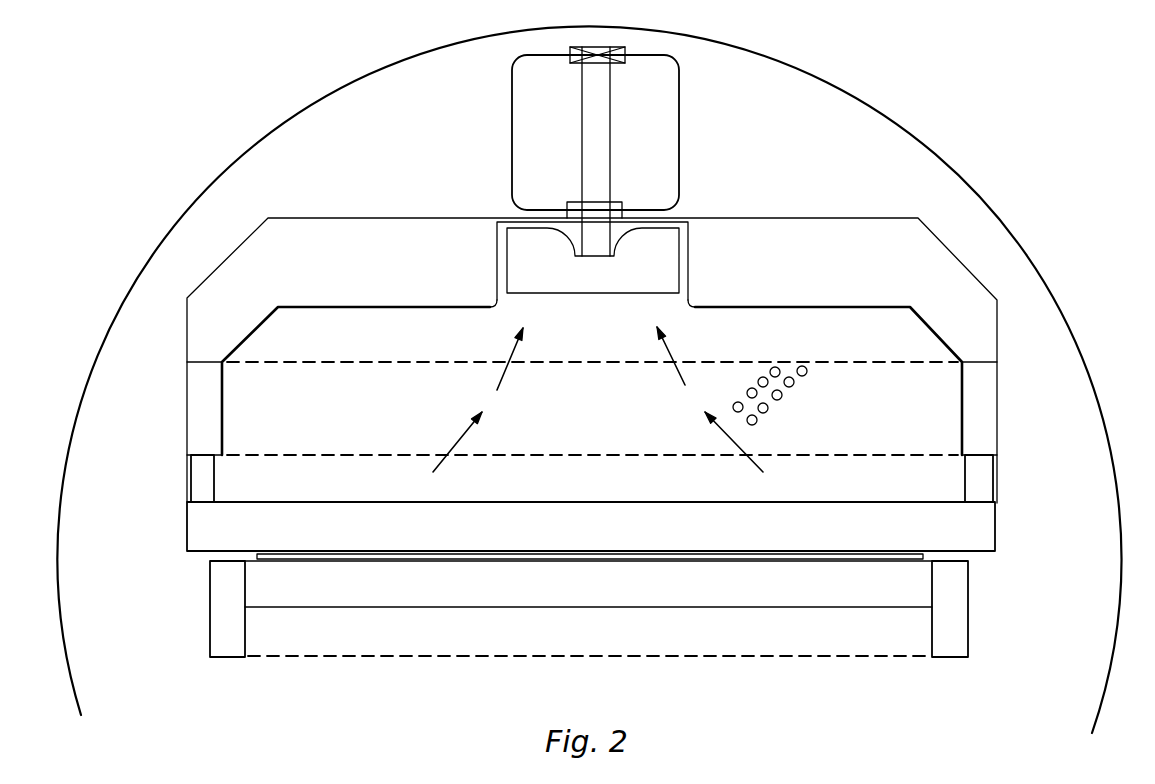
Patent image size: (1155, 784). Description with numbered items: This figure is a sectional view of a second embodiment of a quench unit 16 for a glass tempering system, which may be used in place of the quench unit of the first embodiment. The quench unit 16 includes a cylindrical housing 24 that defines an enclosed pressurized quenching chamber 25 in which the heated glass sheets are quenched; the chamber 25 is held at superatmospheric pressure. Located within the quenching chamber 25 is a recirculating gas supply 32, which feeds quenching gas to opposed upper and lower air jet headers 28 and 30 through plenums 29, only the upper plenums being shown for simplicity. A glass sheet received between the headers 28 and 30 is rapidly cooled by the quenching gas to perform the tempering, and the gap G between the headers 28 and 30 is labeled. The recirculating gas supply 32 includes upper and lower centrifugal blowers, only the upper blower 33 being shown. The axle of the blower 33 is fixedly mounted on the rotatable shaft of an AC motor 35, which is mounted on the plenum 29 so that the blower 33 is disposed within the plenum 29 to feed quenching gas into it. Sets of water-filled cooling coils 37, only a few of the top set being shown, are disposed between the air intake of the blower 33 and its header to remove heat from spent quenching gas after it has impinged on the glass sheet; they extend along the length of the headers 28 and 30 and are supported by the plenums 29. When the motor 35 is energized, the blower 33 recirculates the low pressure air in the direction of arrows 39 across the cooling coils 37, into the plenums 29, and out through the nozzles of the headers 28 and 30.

The quench unit 16 is at (927, 76).
The cylindrical housing 24 is at (1044, 271).
The quenching chamber 25 is at (1057, 318).
The upper air jet header 28 is at (995, 528).
The plenums 29 is at (238, 247).
The lower air jet header 30 is at (932, 594).
The recirculating gas supply 32 is at (889, 149).
The centrifugal blower 33 is at (693, 233).
The AC motor 35 is at (680, 117).
The cooling coils 37 is at (770, 410).
The arrows 39 is at (506, 372).
The gap G is at (763, 556).